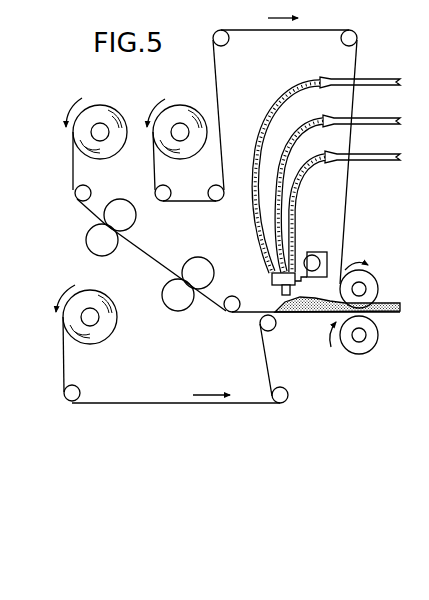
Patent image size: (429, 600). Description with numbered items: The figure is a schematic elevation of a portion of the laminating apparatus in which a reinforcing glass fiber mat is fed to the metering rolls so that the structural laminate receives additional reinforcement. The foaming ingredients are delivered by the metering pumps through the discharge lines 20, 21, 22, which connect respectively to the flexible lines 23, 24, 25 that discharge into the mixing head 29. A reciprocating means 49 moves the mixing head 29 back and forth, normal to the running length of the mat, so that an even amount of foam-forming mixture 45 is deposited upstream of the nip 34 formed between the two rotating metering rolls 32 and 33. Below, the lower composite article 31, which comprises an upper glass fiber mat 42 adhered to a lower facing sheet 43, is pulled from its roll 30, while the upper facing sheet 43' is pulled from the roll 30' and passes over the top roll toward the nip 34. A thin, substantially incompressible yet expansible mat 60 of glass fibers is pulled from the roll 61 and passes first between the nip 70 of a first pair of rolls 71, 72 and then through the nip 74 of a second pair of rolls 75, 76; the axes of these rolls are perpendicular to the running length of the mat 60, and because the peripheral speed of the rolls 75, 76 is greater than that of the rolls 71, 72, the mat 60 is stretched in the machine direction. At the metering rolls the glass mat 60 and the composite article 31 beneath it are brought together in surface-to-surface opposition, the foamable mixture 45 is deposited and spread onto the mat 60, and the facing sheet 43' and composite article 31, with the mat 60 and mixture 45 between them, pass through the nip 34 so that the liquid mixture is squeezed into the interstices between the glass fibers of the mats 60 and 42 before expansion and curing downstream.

The discharge line 20 is at (372, 79).
The discharge line 21 is at (363, 119).
The discharge line 22 is at (360, 155).
The flexible line 23 is at (283, 89).
The flexible line 24 is at (299, 128).
The flexible line 25 is at (311, 164).
The mixing head 29 is at (272, 278).
The roll of composite article 30 is at (92, 305).
The roll of upper facing sheet 30' is at (185, 135).
The composite article 31 is at (61, 361).
The metering roll 32 is at (376, 280).
The metering roll 33 is at (378, 337).
The nip 34 is at (358, 315).
The glass fiber mat 42 is at (153, 402).
The lower facing sheet 43 is at (240, 377).
The upper facing sheet 43' is at (312, 151).
The foam-forming mixture 45 is at (300, 309).
The reciprocating means 49 is at (318, 252).
The reinforcing glass fiber mat 60 is at (154, 259).
The roll of glass fiber mat 61 is at (107, 105).
The nip of first pair of rolls 70 is at (98, 224).
The roll of first pair 71 is at (129, 201).
The roll of first pair 72 is at (88, 242).
The nip of second pair of rolls 74 is at (198, 303).
The roll of second pair 75 is at (196, 258).
The roll of second pair 76 is at (163, 298).